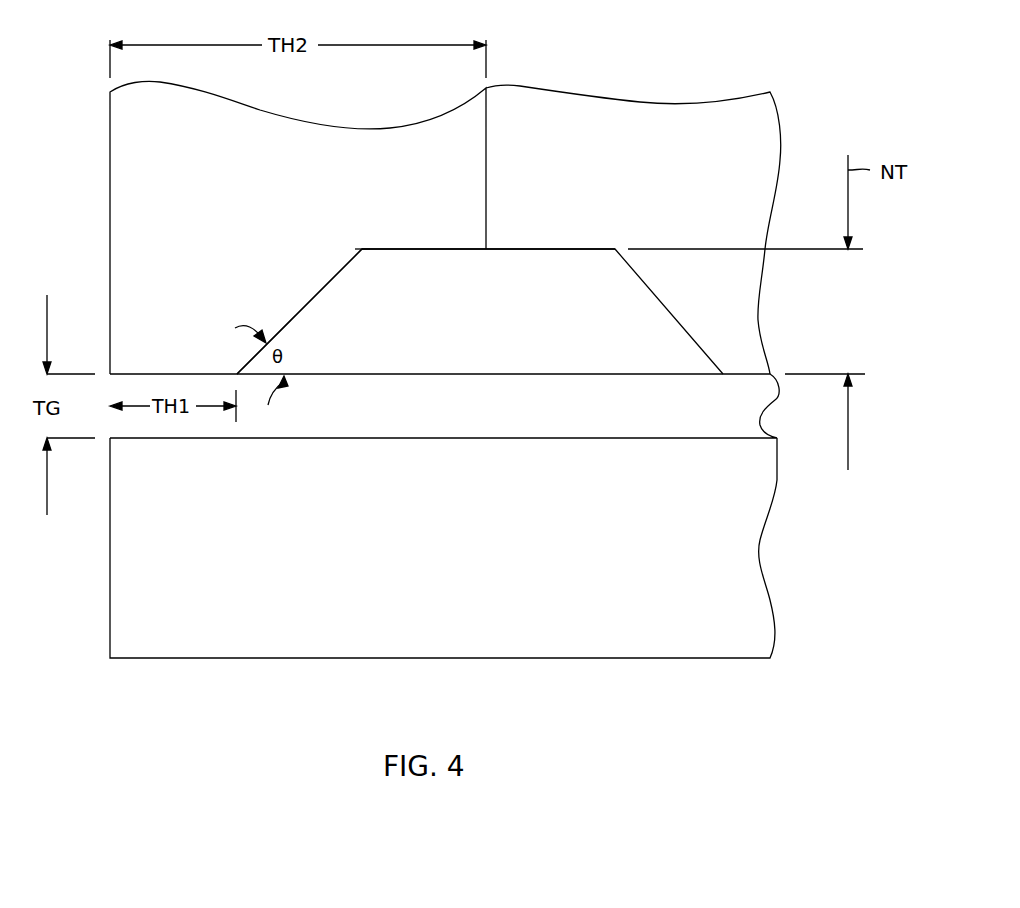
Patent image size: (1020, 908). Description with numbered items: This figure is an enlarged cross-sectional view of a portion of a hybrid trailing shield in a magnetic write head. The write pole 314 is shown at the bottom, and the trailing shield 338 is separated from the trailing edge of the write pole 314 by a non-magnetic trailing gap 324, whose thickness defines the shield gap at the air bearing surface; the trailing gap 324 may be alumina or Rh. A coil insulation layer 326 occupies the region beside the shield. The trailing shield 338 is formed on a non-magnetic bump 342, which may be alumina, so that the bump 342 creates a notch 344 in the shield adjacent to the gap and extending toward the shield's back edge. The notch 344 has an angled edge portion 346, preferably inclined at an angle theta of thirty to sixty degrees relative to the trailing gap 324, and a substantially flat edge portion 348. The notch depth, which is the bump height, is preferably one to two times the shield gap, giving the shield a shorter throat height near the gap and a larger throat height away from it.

The write pole 314 is at (470, 548).
The trailing gap 324 is at (490, 406).
The coil insulation layer 326 is at (664, 183).
The trailing shield 338 is at (229, 176).
The non-magnetic bump 342 is at (499, 320).
The notch 344 is at (392, 251).
The angled edge portion 346 is at (318, 291).
The substantially flat edge portion 348 is at (430, 249).